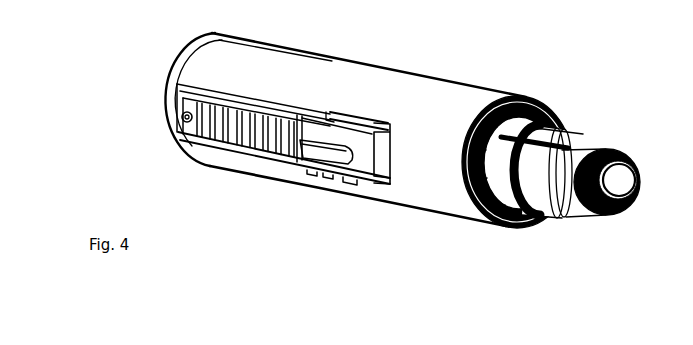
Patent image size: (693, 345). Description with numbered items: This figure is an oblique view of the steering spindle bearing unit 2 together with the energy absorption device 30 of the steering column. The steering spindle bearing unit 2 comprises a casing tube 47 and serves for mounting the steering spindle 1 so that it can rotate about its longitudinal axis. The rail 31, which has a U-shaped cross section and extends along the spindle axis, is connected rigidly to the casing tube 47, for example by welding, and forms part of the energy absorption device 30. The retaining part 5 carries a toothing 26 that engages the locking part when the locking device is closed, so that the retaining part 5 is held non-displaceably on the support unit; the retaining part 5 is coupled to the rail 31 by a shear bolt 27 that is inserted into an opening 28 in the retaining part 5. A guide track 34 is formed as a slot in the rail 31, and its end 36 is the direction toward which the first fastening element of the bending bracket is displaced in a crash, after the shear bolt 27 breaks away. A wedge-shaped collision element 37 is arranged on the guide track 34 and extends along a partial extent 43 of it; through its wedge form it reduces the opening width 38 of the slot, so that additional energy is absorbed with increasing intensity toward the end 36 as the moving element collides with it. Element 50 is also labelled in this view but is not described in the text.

The steering spindle 1 is at (547, 206).
The steering spindle bearing unit 2 is at (485, 79).
The retaining part 5 is at (215, 142).
The toothing 26 is at (268, 143).
The shear bolt 27 is at (176, 125).
The opening 28 is at (182, 116).
The energy absorption device 30 is at (282, 169).
The rail 31 is at (362, 184).
The guide track 34 is at (313, 177).
The end 36 is at (372, 181).
The collision element 37 is at (344, 184).
The opening width 38 is at (316, 142).
The partial extent 43 is at (326, 179).
The casing tube 47 is at (425, 85).
The element 50 is at (159, 4).